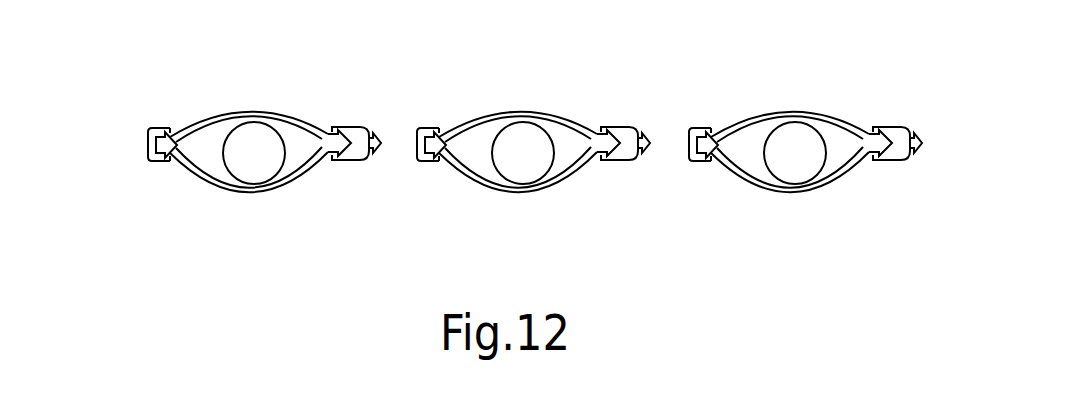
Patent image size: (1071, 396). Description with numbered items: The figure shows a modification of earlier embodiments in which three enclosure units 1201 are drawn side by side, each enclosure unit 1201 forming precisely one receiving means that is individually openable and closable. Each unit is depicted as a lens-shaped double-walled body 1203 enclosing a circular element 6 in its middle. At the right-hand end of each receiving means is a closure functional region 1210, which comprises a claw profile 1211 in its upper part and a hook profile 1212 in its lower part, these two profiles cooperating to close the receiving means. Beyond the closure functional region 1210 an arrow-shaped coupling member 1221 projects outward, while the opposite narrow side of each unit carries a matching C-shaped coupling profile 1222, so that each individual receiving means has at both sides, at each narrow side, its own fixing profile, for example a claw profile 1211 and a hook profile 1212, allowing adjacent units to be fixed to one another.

The lens element 6 is at (263, 167).
The enclosure unit 1201 is at (244, 88).
The lens body 1203 is at (262, 193).
The closure functional region 1210 is at (358, 117).
The claw profile 1211 is at (360, 135).
The hook profile 1212 is at (333, 160).
The male coupling arrow 1221 is at (366, 162).
The female coupling clip 1222 is at (150, 127).